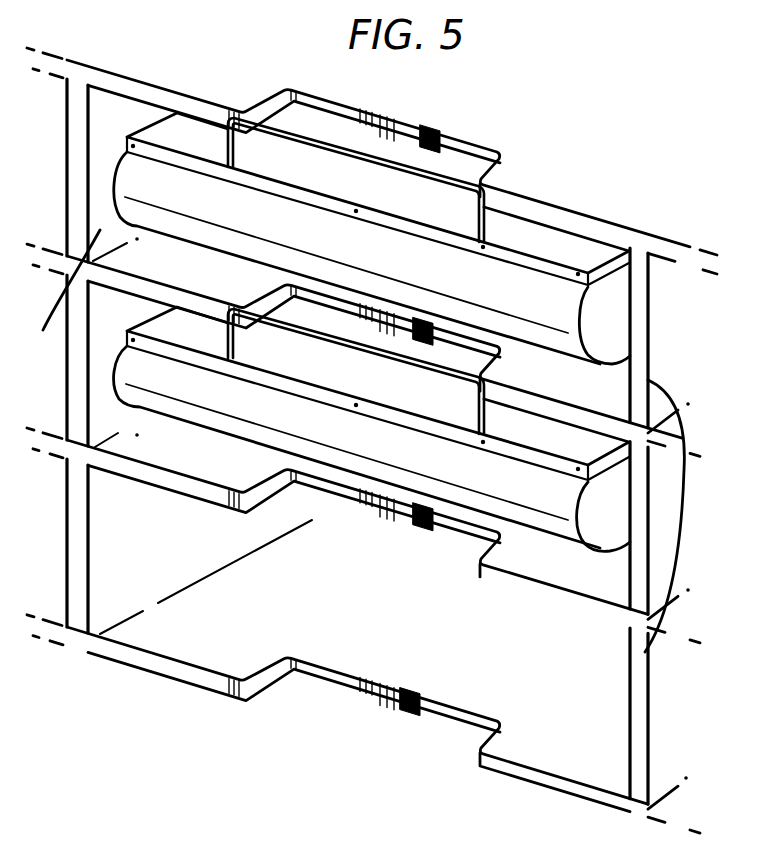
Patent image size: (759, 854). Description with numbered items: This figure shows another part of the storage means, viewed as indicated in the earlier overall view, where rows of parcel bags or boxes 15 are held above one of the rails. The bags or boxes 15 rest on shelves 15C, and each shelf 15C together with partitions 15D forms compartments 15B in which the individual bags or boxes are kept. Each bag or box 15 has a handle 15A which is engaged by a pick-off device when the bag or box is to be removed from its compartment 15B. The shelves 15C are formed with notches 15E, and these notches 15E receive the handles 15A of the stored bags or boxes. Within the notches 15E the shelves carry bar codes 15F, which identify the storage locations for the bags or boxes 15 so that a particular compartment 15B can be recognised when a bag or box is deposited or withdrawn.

The parcel bags or boxes 15 is at (590, 252).
The handles 15A is at (470, 180).
The compartments 15B is at (592, 392).
The shelves 15C is at (200, 490).
The partitions 15D is at (107, 302).
The notches 15E is at (312, 708).
The bar codes 15F is at (408, 683).